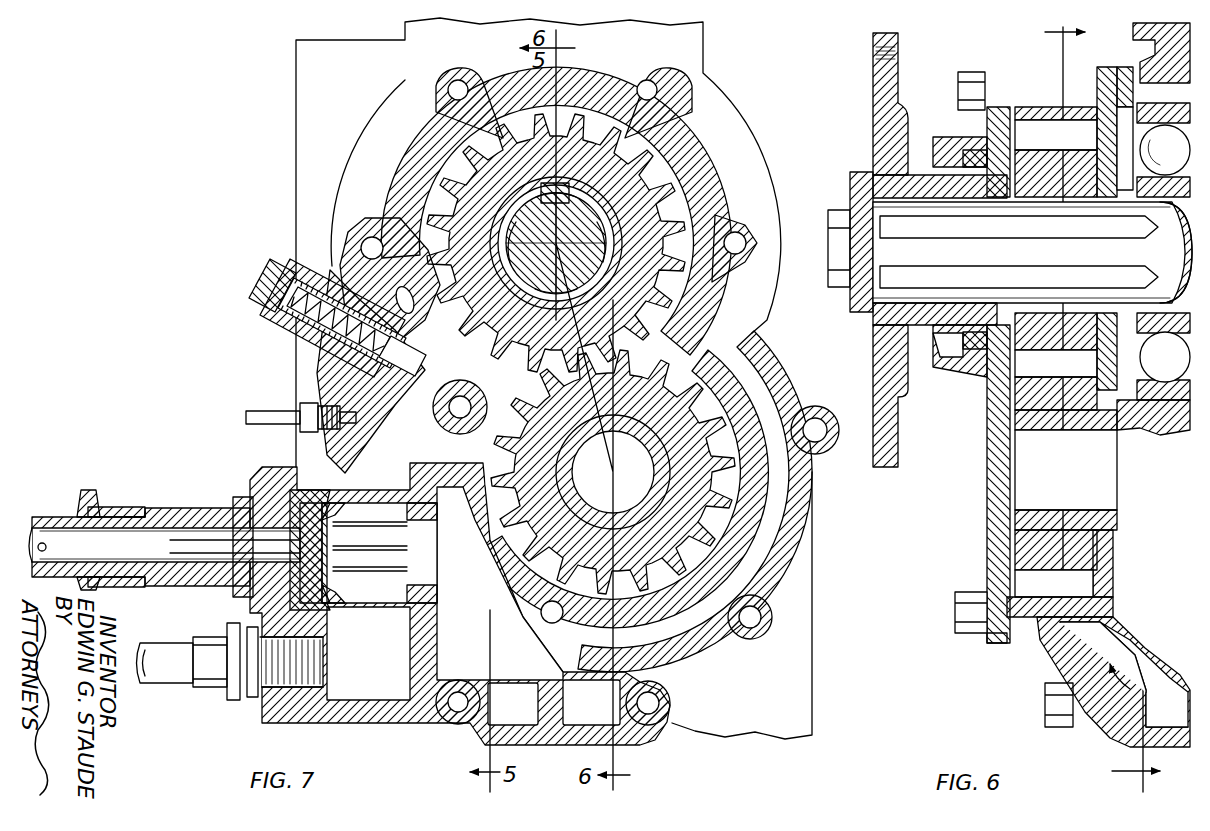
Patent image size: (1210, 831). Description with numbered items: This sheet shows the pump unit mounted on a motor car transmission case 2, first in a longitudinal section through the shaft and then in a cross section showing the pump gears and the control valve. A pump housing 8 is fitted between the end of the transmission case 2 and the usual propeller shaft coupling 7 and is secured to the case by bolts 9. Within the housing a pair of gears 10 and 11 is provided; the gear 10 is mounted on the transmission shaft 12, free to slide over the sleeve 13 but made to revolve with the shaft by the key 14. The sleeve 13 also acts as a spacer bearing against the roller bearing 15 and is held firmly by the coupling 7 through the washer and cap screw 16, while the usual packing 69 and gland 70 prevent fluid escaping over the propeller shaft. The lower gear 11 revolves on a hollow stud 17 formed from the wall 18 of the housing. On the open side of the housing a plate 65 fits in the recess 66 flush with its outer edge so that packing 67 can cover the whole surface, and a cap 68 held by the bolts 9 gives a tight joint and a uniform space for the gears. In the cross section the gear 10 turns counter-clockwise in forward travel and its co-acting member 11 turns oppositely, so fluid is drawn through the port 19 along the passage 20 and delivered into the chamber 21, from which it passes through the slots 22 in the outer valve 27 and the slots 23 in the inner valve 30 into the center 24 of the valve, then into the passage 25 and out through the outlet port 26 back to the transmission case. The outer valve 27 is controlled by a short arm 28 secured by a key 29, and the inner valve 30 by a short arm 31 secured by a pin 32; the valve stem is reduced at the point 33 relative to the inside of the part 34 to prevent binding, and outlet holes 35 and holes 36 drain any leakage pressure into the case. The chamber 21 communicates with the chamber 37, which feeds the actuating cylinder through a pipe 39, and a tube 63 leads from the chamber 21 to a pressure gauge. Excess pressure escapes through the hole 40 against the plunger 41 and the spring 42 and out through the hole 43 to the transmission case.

In FIG. 7, the transmission case 2 is at (800, 603).
In FIG. 6, the propeller shaft coupling 7 is at (1045, 32).
In FIG. 7, the pump housing 8 is at (672, 158).
In FIG. 6, the pump housing 8 is at (1078, 110).
In FIG. 7, the bolts 9 is at (450, 95).
In FIG. 6, the bolts 9 is at (989, 399).
In FIG. 7, the pump gear 10 is at (640, 300).
In FIG. 6, the pump gear 10 is at (1000, 135).
In FIG. 7, the co-acting gear 11 is at (640, 348).
In FIG. 6, the co-acting gear 11 is at (1080, 580).
In FIG. 7, the transmission shaft 12 is at (520, 325).
In FIG. 6, the transmission shaft 12 is at (1032, 252).
In FIG. 7, the sleeve 13 is at (500, 195).
In FIG. 6, the sleeve 13 is at (1115, 120).
In FIG. 7, the key 14 is at (565, 190).
In FIG. 6, the key 14 is at (1055, 190).
In FIG. 6, the roller bearing 15 is at (1155, 440).
In FIG. 6, the washer and cap screw 16 is at (838, 252).
In FIG. 7, the hollow stud 17 is at (580, 485).
In FIG. 6, the hollow stud 17 is at (1068, 515).
In FIG. 6, the wall 18 is at (1100, 545).
In FIG. 7, the port 19 is at (591, 702).
In FIG. 6, the port 19 is at (1113, 682).
In FIG. 7, the passage 20 is at (760, 548).
In FIG. 7, the chamber 21 is at (340, 400).
In FIG. 7, the slots 22 is at (300, 408).
In FIG. 7, the slots 23 is at (370, 520).
In FIG. 7, the center of the valve 24 is at (379, 553).
In FIG. 7, the passage 25 is at (500, 583).
In FIG. 7, the outlet port 26 is at (513, 704).
In FIG. 7, the outer valve 27 is at (175, 510).
In FIG. 7, the short arm 28 is at (112, 505).
In FIG. 7, the key 29 is at (133, 513).
In FIG. 7, the inner valve 30 is at (164, 545).
In FIG. 7, the short arm 31 is at (82, 500).
In FIG. 7, the pin 32 is at (40, 540).
In FIG. 7, the point 33 is at (235, 548).
In FIG. 7, the part 34 is at (228, 510).
In FIG. 7, the outlet holes 35 is at (290, 500).
In FIG. 7, the holes 36 is at (320, 575).
In FIG. 7, the chamber 37 is at (372, 688).
In FIG. 7, the pipe 39 is at (165, 668).
In FIG. 7, the hole 40 is at (415, 365).
In FIG. 7, the plunger 41 is at (412, 345).
In FIG. 7, the spring 42 is at (262, 300).
In FIG. 7, the hole 43 is at (403, 286).
In FIG. 7, the tube 63 is at (262, 416).
In FIG. 6, the plate 65 is at (988, 498).
In FIG. 6, the recess 66 is at (990, 640).
In FIG. 6, the packing 67 is at (1005, 640).
In FIG. 6, the cap 68 is at (990, 555).
In FIG. 6, the packing 69 is at (975, 355).
In FIG. 6, the gland 70 is at (945, 370).